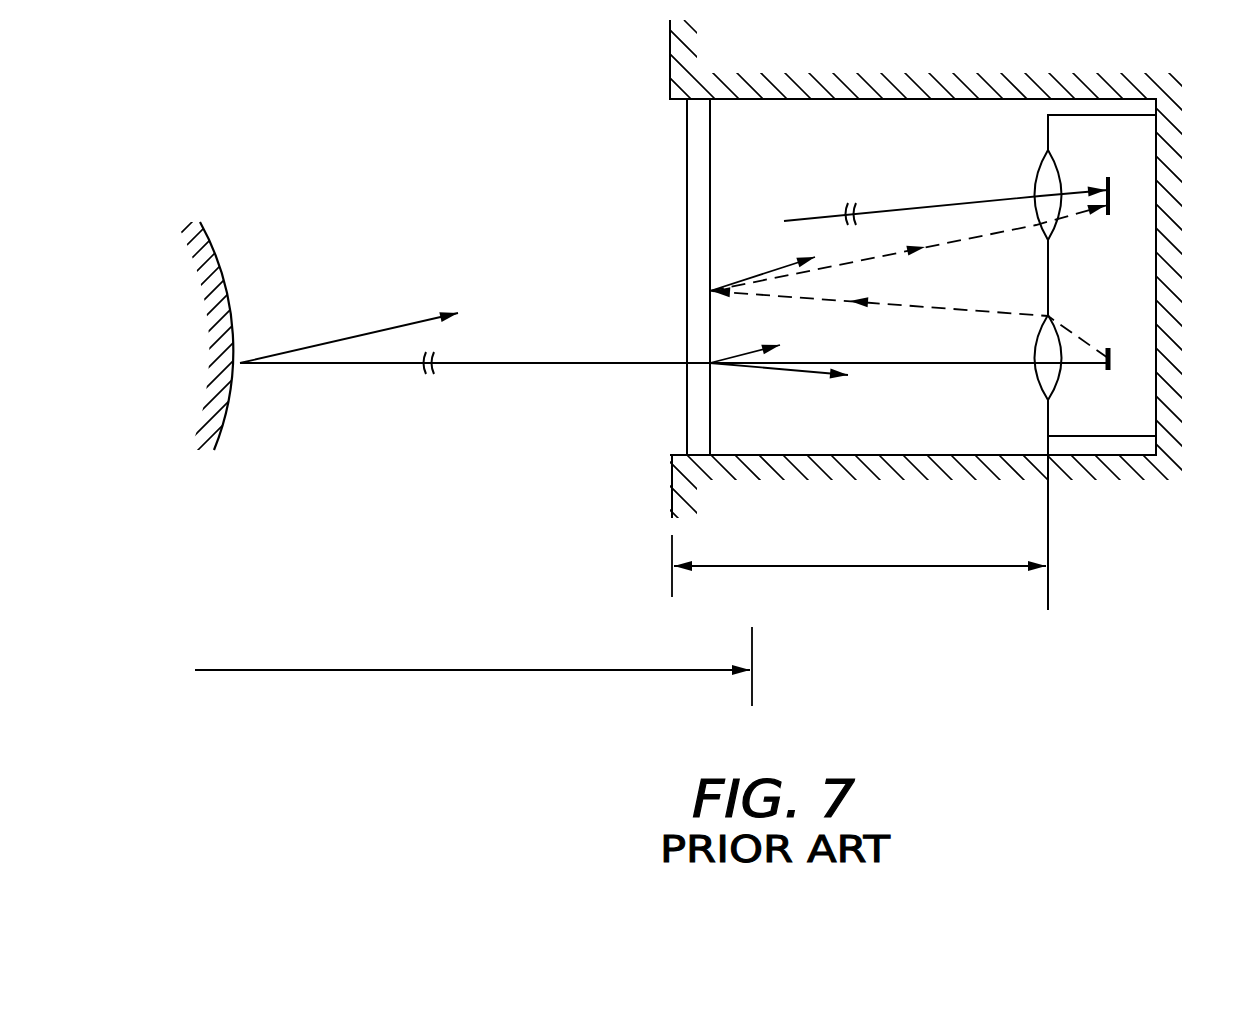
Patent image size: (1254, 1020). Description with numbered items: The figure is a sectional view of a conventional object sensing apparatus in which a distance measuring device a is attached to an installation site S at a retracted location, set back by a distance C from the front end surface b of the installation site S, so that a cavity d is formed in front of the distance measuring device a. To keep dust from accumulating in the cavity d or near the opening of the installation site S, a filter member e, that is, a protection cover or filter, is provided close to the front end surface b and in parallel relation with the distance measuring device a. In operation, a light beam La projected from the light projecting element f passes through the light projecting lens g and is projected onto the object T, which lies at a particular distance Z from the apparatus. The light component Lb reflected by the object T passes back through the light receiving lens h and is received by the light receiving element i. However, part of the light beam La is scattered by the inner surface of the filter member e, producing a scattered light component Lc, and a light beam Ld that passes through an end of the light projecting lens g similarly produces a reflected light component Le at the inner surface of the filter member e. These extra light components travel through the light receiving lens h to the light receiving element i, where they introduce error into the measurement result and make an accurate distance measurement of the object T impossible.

The installation site S is at (900, 88).
The front end surface b is at (670, 34).
The cavity d is at (787, 118).
The filter member e is at (695, 134).
The distance measuring device a is at (1142, 164).
The light receiving lens h is at (1052, 178).
The light projecting lens g is at (1052, 380).
The light receiving element i is at (1112, 195).
The light projecting element f is at (1112, 358).
The object T is at (198, 262).
The light beam La is at (520, 366).
The reflected light component Lb is at (345, 338).
The scattered light component Lc is at (742, 356).
The light beam Ld is at (986, 318).
The reflected light component Le is at (958, 236).
The distance C is at (859, 564).
The distance Z is at (473, 666).